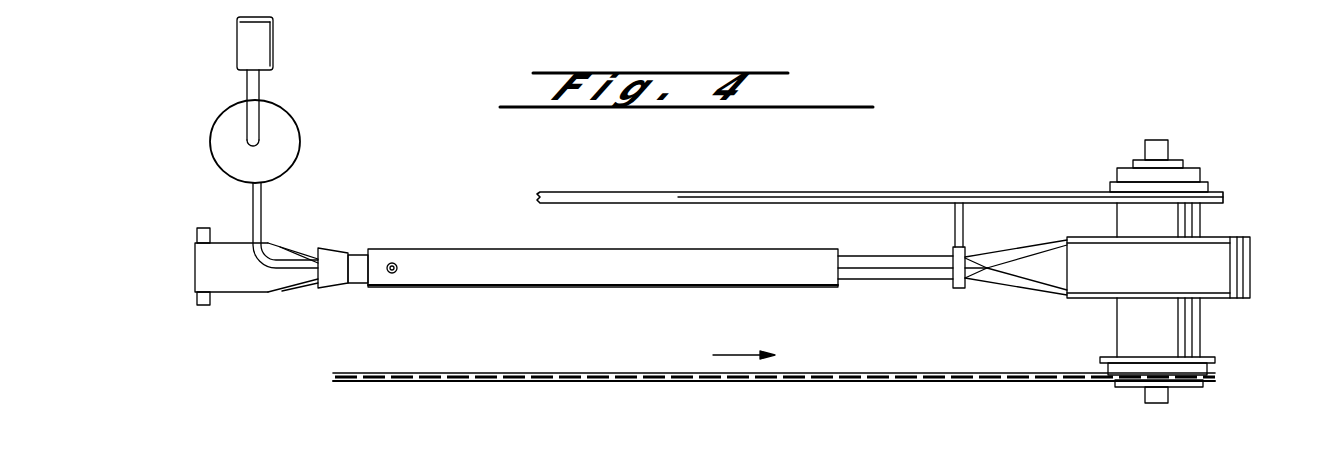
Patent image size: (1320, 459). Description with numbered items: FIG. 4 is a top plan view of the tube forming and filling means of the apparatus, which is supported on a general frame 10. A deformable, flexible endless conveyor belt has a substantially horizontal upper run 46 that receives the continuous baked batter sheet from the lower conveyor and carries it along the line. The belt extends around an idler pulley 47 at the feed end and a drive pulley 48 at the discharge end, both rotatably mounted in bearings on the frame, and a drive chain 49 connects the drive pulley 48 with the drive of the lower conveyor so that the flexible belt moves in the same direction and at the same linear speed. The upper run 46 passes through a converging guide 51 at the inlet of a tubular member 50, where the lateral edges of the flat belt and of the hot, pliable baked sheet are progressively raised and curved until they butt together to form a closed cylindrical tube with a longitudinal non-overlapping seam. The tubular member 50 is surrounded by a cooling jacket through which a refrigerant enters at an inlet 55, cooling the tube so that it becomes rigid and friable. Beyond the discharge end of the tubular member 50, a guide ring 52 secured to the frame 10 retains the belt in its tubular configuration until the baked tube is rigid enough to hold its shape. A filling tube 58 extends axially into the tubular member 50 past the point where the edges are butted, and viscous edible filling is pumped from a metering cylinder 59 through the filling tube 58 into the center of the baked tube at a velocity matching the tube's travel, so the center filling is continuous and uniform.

The general frame 10 is at (893, 192).
The upper run 46 is at (215, 266).
The idler pulley 47 is at (197, 233).
The drive pulley 48 is at (1245, 238).
The drive chain 49 is at (632, 350).
The tubular member 50 is at (495, 270).
The converging guide 51 is at (335, 285).
The guide ring 52 is at (960, 289).
The inlet 55 is at (392, 273).
The filling tube 58 is at (262, 200).
The metering cylinder 59 is at (213, 145).